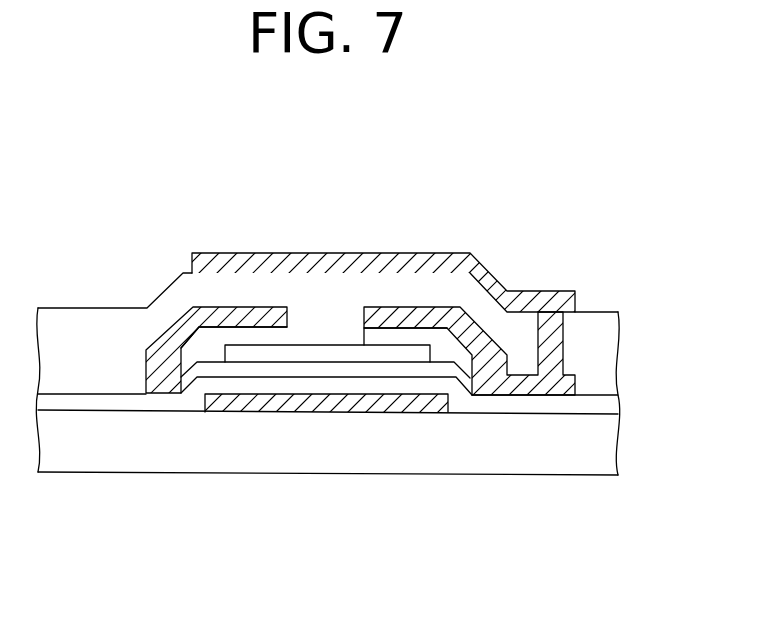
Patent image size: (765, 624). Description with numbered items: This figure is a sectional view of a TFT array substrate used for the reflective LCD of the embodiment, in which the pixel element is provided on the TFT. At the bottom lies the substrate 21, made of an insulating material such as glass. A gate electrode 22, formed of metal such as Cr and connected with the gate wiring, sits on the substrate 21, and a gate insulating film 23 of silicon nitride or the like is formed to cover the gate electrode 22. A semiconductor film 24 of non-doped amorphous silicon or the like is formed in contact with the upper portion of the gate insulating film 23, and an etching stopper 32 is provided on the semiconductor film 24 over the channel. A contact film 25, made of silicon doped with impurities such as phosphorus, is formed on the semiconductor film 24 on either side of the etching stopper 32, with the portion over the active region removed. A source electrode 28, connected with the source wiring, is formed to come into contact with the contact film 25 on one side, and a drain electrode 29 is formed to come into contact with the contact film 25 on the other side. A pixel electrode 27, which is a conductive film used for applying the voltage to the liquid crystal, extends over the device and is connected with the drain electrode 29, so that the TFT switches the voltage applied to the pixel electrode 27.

The substrate 21 is at (565, 455).
The gate electrode 22 is at (253, 403).
The gate insulating film 23 is at (483, 407).
The semiconductor film 24 is at (313, 372).
The contact film 25 is at (208, 345).
The pixel electrode 27 is at (459, 258).
The source electrode 28 is at (248, 312).
The drain electrode 29 is at (467, 325).
The etching stopper 32 is at (332, 355).